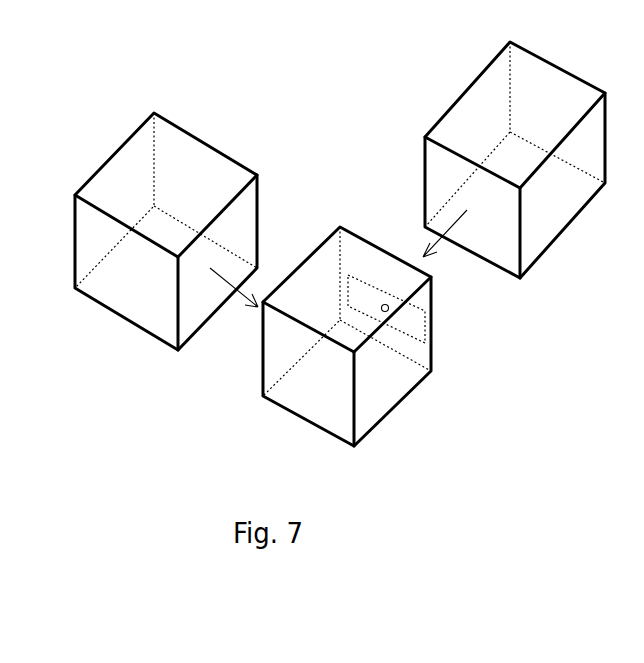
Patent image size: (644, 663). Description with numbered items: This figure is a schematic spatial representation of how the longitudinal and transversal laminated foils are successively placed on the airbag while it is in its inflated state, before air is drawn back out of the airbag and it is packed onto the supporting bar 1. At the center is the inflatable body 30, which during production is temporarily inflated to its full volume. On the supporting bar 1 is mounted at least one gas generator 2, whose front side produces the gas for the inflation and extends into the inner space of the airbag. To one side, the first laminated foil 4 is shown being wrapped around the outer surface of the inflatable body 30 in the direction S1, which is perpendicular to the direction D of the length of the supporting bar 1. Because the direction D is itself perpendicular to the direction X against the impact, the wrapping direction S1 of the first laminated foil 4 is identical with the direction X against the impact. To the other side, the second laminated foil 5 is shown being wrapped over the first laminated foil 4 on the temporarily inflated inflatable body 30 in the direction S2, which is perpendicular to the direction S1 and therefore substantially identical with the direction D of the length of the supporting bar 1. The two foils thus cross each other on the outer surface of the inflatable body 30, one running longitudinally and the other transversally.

The supporting bar 1 is at (355, 287).
The gas generator 2 is at (383, 303).
The first laminated foil 4 is at (192, 158).
The second laminated foil 5 is at (478, 113).
The inflatable body 30 is at (376, 293).
The direction of wrapping of the first laminated foil S1 is at (163, 228).
The direction of wrapping of the second laminated foil S2 is at (572, 156).
The direction against the impact X is at (290, 428).
The direction of the length of the supporting bar D is at (445, 348).